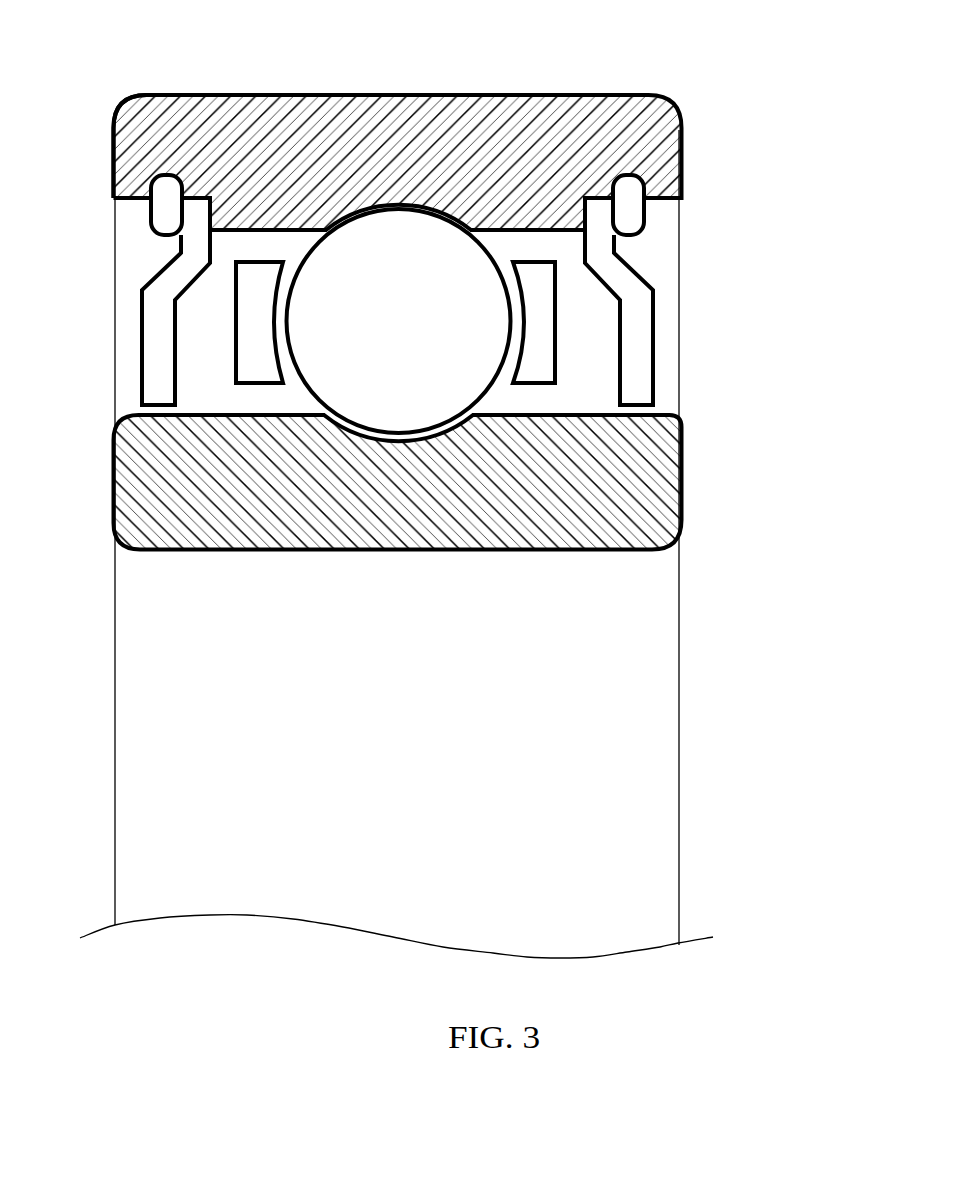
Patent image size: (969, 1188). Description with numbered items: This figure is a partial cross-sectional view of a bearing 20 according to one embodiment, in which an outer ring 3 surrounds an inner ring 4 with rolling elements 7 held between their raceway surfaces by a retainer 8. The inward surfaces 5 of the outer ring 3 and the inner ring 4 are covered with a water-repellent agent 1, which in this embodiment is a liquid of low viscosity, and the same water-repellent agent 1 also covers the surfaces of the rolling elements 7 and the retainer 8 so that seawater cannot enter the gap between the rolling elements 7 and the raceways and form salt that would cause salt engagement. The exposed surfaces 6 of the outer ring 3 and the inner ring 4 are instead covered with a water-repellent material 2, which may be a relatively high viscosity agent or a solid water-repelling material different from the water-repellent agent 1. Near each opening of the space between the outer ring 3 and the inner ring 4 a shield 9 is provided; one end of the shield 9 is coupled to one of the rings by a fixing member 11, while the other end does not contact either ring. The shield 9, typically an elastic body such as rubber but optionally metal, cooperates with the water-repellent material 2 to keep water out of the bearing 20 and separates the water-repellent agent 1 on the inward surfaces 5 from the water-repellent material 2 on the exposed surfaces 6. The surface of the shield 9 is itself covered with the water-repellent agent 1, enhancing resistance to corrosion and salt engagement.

The bearing 20 is at (731, 76).
The water-repellent material 2 is at (603, 96).
The exposed surfaces 6 is at (498, 95).
The outer ring 3 is at (150, 148).
The inward surfaces 5 is at (543, 233).
The inner ring 4 is at (150, 494).
The water-repellent agent 1 is at (590, 411).
The rolling elements 7 is at (328, 322).
The retainer 8 is at (543, 336).
The shield 9 is at (158, 372).
The fixing member 11 is at (160, 211).